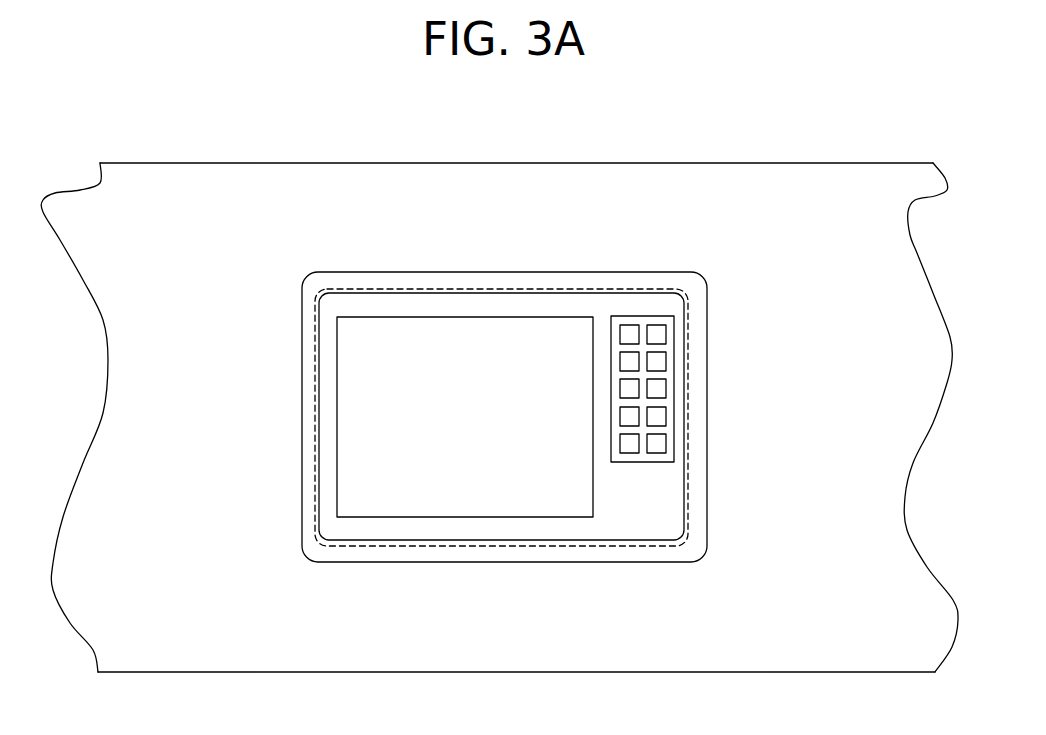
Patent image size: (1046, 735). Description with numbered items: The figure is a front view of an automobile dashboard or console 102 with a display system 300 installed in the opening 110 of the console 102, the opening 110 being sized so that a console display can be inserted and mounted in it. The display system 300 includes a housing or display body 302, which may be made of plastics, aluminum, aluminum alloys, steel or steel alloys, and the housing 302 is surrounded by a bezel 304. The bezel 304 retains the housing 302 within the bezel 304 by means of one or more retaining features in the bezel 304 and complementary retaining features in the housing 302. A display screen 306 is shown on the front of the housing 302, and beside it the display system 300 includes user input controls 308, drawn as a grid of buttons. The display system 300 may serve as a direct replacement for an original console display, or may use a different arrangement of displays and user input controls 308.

The console 102 is at (716, 163).
The display system 300 is at (487, 405).
The bezel 304 is at (317, 272).
The opening 110 is at (590, 290).
The housing 302 is at (327, 393).
The display screen 306 is at (410, 487).
The user input controls 308 is at (637, 316).